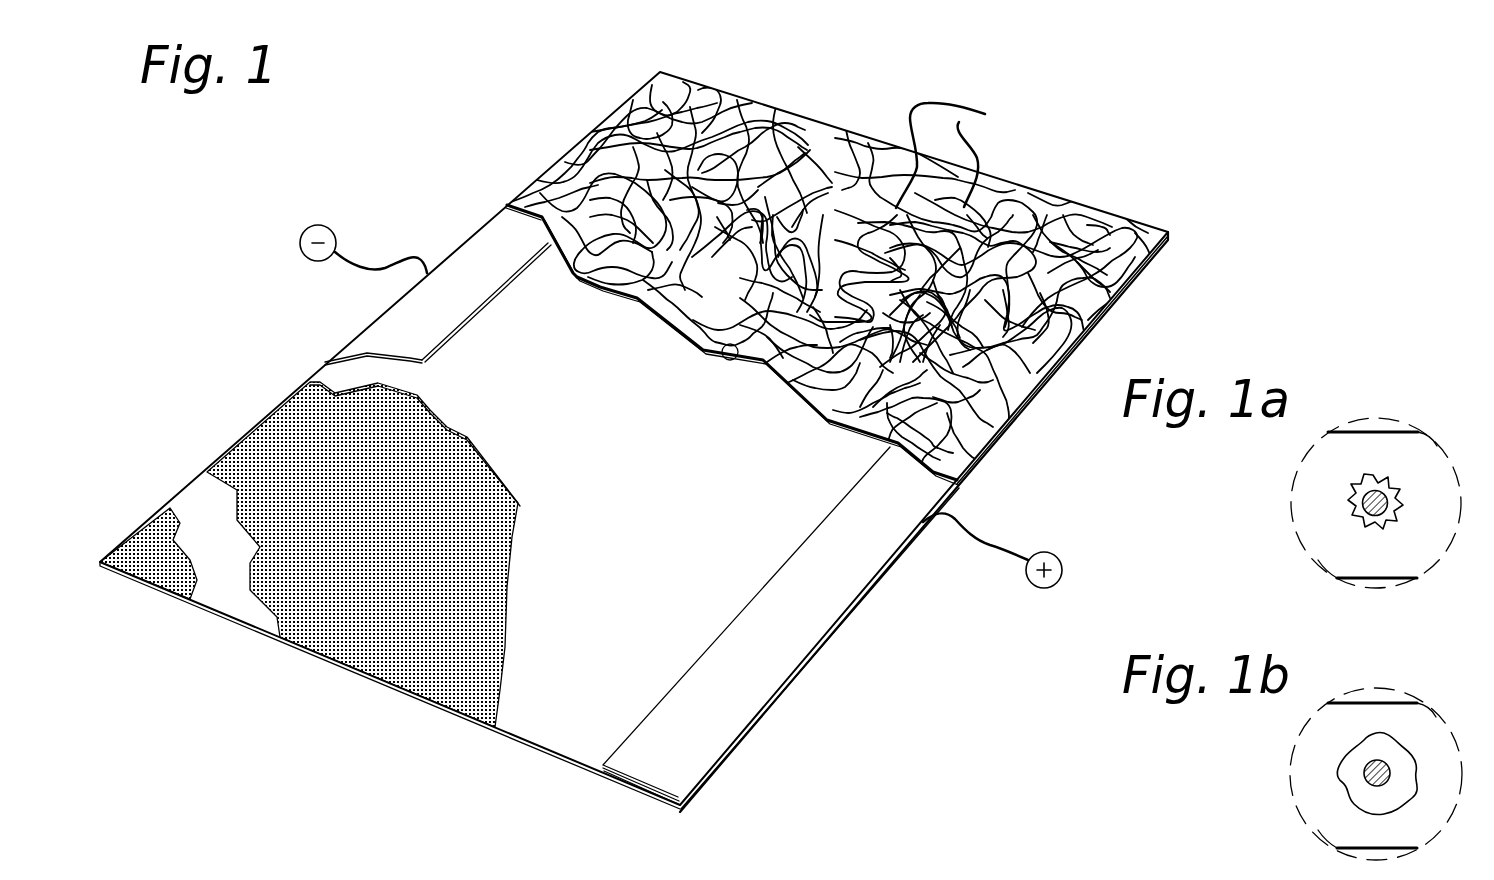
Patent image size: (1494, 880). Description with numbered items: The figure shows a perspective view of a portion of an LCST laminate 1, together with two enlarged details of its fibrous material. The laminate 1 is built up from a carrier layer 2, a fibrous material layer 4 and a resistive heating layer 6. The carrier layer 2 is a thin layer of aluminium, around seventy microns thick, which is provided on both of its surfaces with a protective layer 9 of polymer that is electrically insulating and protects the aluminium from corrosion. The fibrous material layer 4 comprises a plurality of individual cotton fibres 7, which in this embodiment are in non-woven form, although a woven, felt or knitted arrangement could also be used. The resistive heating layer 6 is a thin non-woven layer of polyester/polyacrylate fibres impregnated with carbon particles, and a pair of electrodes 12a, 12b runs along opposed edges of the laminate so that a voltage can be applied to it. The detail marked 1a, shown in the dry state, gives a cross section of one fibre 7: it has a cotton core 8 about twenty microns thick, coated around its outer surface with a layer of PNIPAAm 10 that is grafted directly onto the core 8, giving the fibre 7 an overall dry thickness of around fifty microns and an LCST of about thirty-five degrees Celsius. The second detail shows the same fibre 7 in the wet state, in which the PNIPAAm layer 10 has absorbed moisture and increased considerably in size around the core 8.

In FIG. 1, the LCST laminate 1 is at (457, 157).
In FIG. 1, the detail region 1a is at (732, 362).
In FIG. 1, the carrier layer 2 is at (198, 513).
In FIG. 1, the fibrous material layer 4 is at (798, 152).
In FIG. 1A, the fibrous material layer 4 is at (1425, 462).
In FIG. 1B, the fibrous material layer 4 is at (1424, 740).
In FIG. 1, the resistive heating layer 6 is at (598, 676).
In FIG. 1, the cotton fibre 7 is at (986, 115).
In FIG. 1A, the cotton fibre 7 is at (1395, 412).
In FIG. 1B, the cotton fibre 7 is at (1393, 685).
In FIG. 1A, the core 8 is at (1350, 490).
In FIG. 1B, the core 8 is at (1340, 762).
In FIG. 1, the protective layer 9 is at (262, 440).
In FIG. 1A, the PNIPAAm layer 10 is at (1350, 517).
In FIG. 1B, the PNIPAAm layer 10 is at (1357, 792).
In FIG. 1, the electrode 12a is at (776, 645).
In FIG. 1, the electrode 12b is at (475, 262).